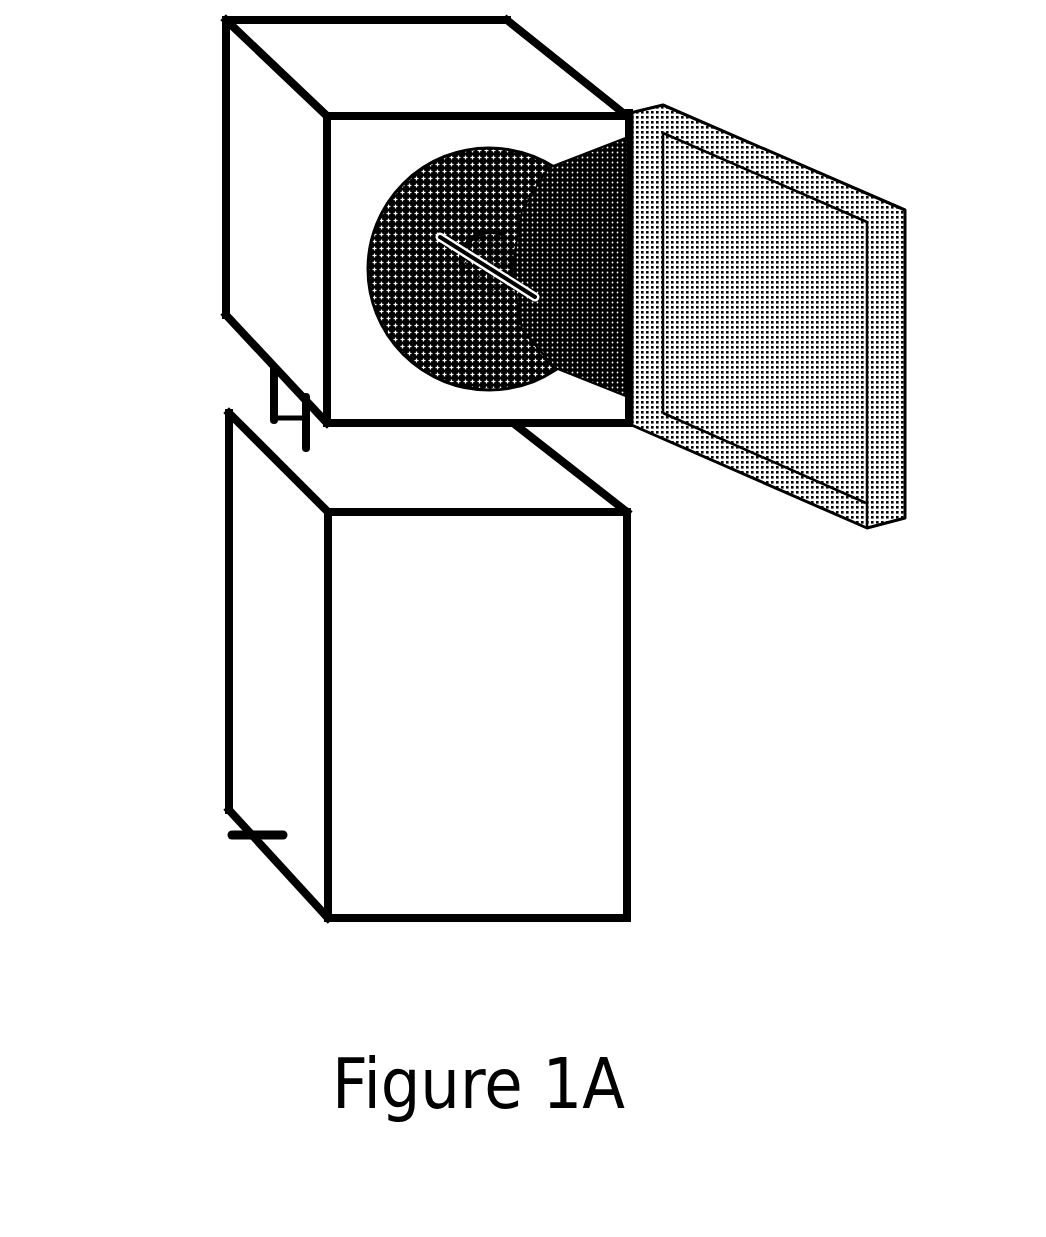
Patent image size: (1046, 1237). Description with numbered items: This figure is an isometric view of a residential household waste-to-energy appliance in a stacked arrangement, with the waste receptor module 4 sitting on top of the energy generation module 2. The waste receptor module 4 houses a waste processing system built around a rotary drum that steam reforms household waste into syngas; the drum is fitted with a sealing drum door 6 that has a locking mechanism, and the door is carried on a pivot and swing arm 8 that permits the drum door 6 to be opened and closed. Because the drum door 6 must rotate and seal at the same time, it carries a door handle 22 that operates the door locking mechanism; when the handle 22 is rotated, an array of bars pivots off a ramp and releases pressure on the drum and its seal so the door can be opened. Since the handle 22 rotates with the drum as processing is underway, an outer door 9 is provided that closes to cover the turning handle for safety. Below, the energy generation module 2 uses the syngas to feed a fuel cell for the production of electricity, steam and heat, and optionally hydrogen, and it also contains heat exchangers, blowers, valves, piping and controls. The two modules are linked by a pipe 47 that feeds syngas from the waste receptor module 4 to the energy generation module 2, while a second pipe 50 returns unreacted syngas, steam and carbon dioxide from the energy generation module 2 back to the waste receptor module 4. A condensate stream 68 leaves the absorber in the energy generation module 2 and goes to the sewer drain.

The energy generation module 2 is at (268, 652).
The waste receptor module 4 is at (268, 102).
The sealing drum door 6 is at (377, 217).
The pivot and swing arm 8 is at (607, 143).
The outer door 9 is at (773, 177).
The door handle 22 is at (437, 260).
The pipe 47 is at (267, 380).
The pipe 50 is at (303, 437).
The condensate stream 68 is at (243, 828).